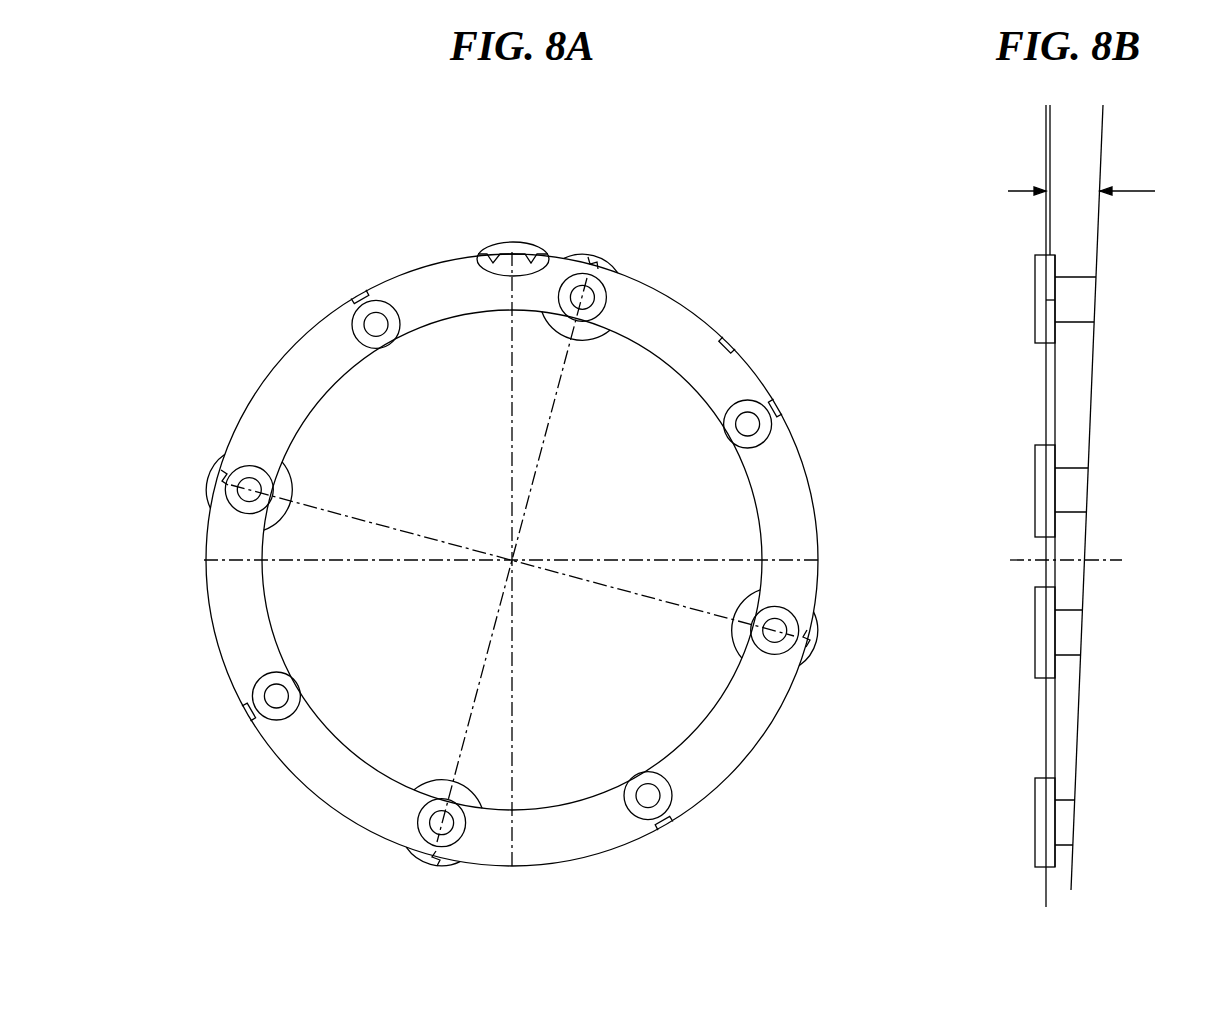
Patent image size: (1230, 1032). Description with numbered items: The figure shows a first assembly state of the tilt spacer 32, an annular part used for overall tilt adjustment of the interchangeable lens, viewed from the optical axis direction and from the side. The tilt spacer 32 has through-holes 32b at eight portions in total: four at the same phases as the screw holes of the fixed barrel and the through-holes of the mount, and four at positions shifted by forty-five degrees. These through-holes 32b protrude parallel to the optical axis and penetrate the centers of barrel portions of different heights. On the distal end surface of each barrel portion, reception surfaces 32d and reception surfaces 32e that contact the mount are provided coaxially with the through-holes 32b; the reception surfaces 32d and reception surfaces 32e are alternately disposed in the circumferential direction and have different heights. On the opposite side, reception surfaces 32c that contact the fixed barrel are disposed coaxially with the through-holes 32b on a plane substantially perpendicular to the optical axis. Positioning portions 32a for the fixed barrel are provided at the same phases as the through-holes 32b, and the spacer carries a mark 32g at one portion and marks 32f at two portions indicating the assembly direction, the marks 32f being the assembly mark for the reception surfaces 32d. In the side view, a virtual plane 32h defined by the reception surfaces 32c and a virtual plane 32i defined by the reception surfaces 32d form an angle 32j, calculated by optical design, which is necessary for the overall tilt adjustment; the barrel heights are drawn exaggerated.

In FIG. 8A, the tilt spacer 32 is at (458, 254).
In FIG. 8A, the positioning portion 32a is at (594, 258).
In FIG. 8A, the through-hole 32b is at (608, 284).
In FIG. 8B, the reception surface 32c is at (1040, 308).
In FIG. 8A, the reception surface 32d is at (578, 286).
In FIG. 8B, the reception surface 32d is at (1097, 300).
In FIG. 8A, the reception surface 32e is at (380, 306).
In FIG. 8A, the mark 32f is at (506, 242).
In FIG. 8A, the mark 32g is at (730, 342).
In FIG. 8B, the virtual plane 32h is at (1046, 136).
In FIG. 8B, the virtual plane 32i is at (1103, 132).
In FIG. 8B, the angle 32j is at (1088, 192).